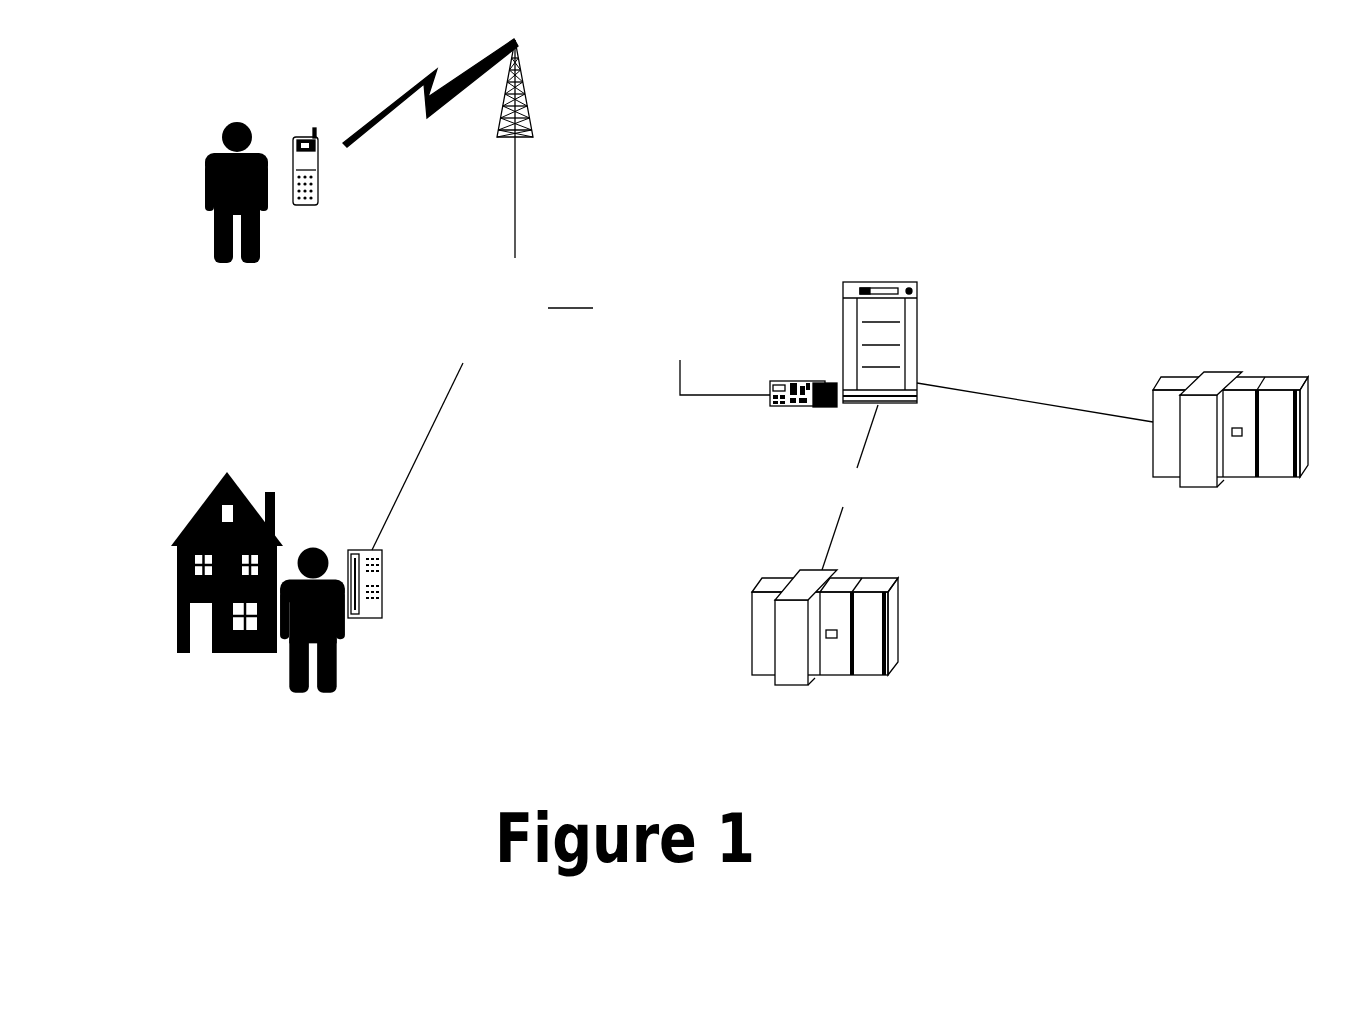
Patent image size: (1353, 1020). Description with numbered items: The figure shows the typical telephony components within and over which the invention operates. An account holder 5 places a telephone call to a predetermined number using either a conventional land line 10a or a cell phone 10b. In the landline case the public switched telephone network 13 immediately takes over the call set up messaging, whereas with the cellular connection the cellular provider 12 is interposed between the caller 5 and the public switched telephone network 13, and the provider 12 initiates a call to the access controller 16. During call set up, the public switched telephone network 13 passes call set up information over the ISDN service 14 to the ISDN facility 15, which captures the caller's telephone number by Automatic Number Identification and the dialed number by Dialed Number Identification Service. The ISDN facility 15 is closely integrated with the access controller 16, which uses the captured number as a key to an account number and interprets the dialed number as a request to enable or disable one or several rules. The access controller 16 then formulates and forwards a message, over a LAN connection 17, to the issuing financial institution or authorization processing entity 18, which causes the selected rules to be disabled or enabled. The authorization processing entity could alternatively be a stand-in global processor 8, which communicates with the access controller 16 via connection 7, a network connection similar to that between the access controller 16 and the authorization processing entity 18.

The account holder 5 is at (257, 260).
The connection 7 is at (1072, 403).
The global processor 8 is at (1235, 478).
The land line 10a is at (383, 561).
The cell phone 10b is at (320, 178).
The cellular provider 12 is at (527, 61).
The public switched telephone network 13 is at (540, 258).
The ISDN service 14 is at (678, 387).
The ISDN facility 15 is at (813, 382).
The access controller 16 is at (908, 282).
The LAN connection 17 is at (870, 451).
The authorization processing entity 18 is at (752, 627).